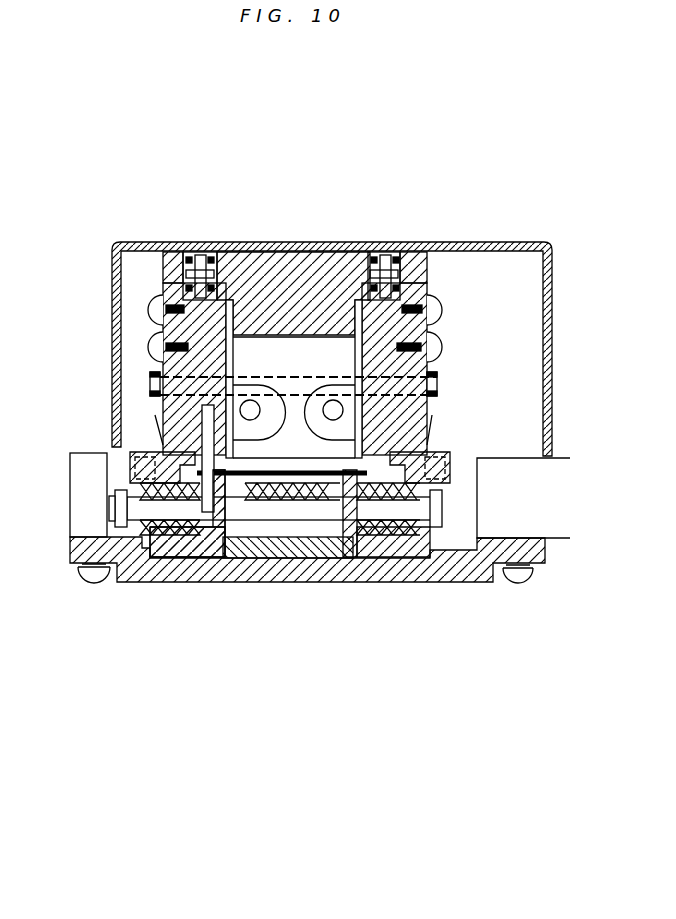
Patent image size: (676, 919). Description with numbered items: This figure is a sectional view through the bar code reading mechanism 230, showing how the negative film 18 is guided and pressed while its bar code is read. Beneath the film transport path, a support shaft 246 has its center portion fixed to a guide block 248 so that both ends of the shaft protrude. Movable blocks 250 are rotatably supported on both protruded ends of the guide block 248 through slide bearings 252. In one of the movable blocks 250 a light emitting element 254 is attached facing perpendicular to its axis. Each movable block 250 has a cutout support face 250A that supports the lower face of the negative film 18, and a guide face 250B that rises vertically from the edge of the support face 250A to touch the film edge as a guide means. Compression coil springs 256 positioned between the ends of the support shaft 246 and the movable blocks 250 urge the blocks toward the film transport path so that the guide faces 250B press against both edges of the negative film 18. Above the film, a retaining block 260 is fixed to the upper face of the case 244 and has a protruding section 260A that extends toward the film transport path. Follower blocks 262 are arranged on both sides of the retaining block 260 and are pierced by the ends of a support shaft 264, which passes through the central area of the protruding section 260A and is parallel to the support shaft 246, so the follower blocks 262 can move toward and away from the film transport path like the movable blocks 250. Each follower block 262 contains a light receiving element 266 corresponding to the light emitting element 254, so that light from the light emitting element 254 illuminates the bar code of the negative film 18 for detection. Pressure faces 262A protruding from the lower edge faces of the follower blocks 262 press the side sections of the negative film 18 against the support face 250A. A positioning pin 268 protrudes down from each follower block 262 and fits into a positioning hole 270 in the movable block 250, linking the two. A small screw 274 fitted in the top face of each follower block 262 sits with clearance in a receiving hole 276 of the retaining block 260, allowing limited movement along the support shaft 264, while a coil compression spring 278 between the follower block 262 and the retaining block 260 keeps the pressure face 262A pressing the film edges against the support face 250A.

The negative film 18 is at (293, 477).
The bar code reading mechanism 230 is at (470, 196).
The case 244 is at (553, 310).
The support shaft 246 is at (241, 545).
The guide block 248 is at (328, 542).
The movable block 250 is at (136, 488).
The support face 250A is at (243, 382).
The guide face 250B is at (158, 393).
The slide bearing 252 is at (181, 545).
The light emitting element 254 is at (204, 540).
The compression coil spring 256 is at (125, 503).
The retaining block 260 is at (318, 280).
The protruding section 260A is at (326, 300).
The follower block 262 is at (150, 335).
The pressure face 262A is at (150, 440).
The support shaft 264 is at (438, 385).
The light receiving element 266 is at (162, 370).
The positioning pin 268 is at (150, 452).
The positioning hole 270 is at (130, 470).
The small screw 274 is at (272, 252).
The receiving hole 276 is at (195, 252).
The coil compression spring 278 is at (238, 262).